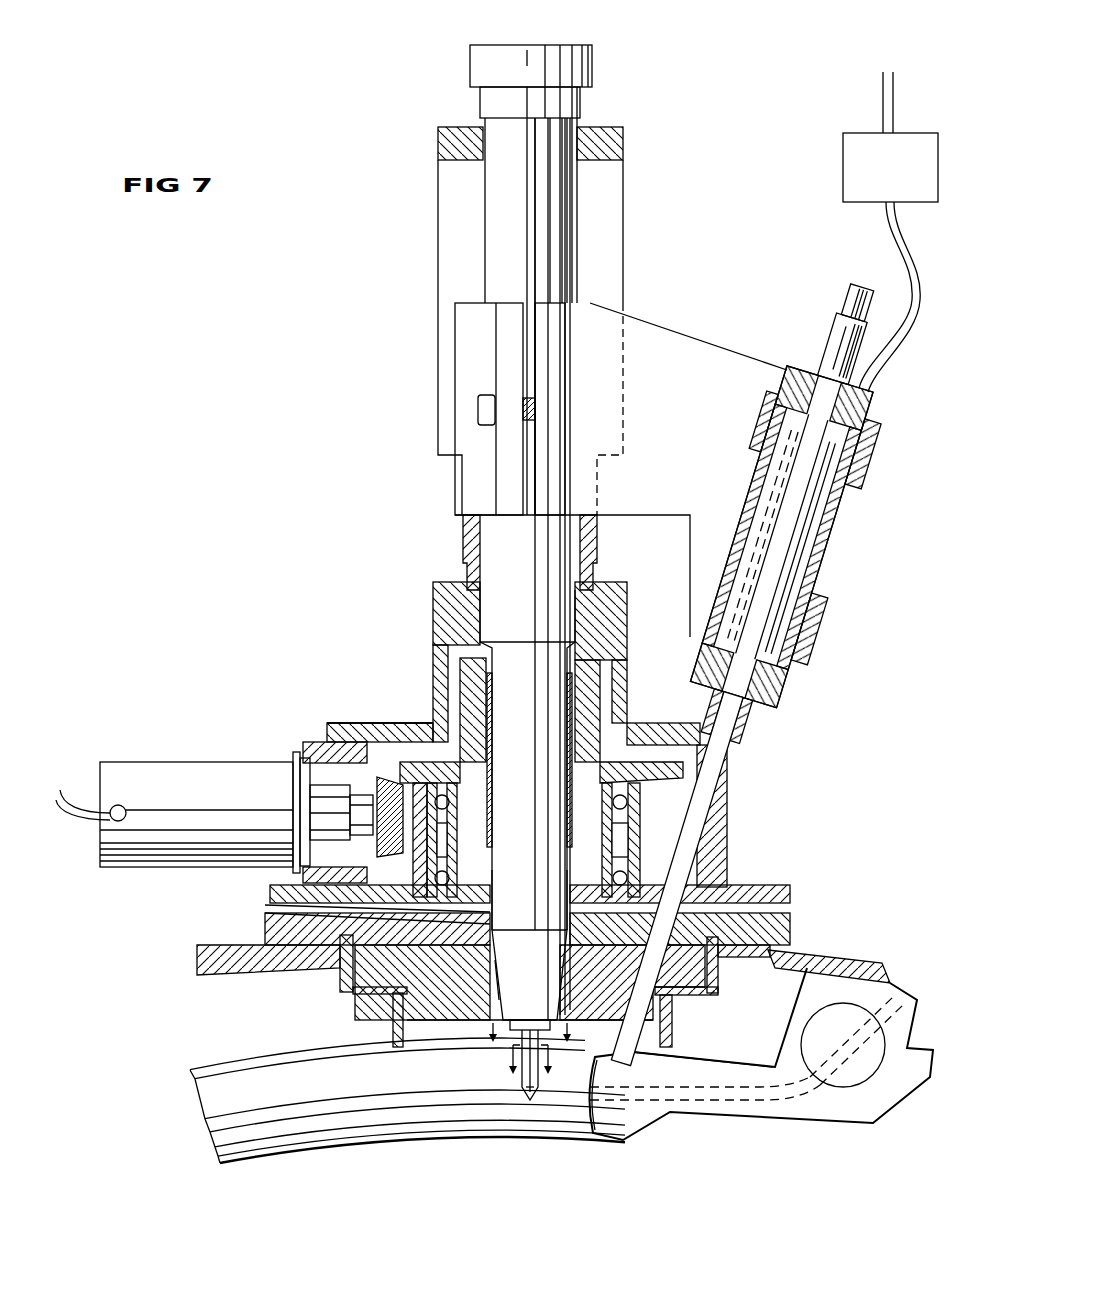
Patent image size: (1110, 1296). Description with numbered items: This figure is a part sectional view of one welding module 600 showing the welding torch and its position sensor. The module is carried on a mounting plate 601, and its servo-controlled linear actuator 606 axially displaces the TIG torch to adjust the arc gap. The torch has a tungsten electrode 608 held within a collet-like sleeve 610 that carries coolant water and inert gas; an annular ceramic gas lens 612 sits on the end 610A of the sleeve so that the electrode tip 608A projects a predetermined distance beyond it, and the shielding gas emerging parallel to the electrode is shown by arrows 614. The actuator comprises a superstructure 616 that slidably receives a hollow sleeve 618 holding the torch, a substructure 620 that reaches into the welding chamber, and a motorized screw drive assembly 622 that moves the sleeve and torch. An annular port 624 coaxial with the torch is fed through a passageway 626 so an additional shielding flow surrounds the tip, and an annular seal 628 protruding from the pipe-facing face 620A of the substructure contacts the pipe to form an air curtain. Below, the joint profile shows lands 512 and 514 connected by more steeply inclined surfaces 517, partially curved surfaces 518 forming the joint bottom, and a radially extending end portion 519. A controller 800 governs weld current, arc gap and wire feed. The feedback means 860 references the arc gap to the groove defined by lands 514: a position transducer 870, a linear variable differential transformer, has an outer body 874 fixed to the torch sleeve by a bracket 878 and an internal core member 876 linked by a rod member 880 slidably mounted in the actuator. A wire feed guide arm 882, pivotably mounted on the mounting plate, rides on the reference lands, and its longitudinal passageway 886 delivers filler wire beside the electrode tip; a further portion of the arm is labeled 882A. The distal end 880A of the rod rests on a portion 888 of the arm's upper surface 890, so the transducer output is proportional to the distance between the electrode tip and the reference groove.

The welding module 600 is at (531, 553).
The servo-controlled linear actuator 606 is at (346, 708).
The tungsten electrode 608 is at (522, 1072).
The electrode tip 608A is at (532, 1094).
The sleeve 610 is at (531, 753).
The end of sleeve 610A is at (541, 905).
The gas lens 612 is at (531, 970).
The gas flow arrows 614 is at (500, 1060).
The superstructure 616 is at (440, 652).
The hollow sleeve 618 is at (490, 695).
The substructure 620 is at (365, 993).
The pipe-facing face of substructure 620A is at (420, 1025).
The motorized screw drive assembly 622 is at (246, 780).
The annular port 624 is at (494, 996).
The passageway 626 is at (270, 915).
The seal 628 is at (392, 1045).
The mounting plate 601 is at (830, 964).
The land 512 is at (190, 1069).
The inclined surface 517 is at (200, 1099).
The land 514 is at (208, 1126).
The partially curved surface 518 is at (214, 1143).
The radial end surface portion 519 is at (222, 1164).
The controller 800 is at (850, 140).
The feedback means 860 is at (838, 351).
The position transducer 870 is at (797, 541).
The outer body 874 is at (732, 697).
The internal core member 876 is at (836, 542).
The bracket 878 is at (705, 340).
The rod member 880 is at (719, 739).
The distal end of rod member 880A is at (672, 1040).
The wire feed guide arm 882 is at (862, 1124).
The clamp arm plate 882A is at (712, 1077).
The longitudinal passageway 886 is at (758, 1102).
The upper surface portion 888 is at (592, 1096).
The upper surface of guide arm 890 is at (775, 1050).